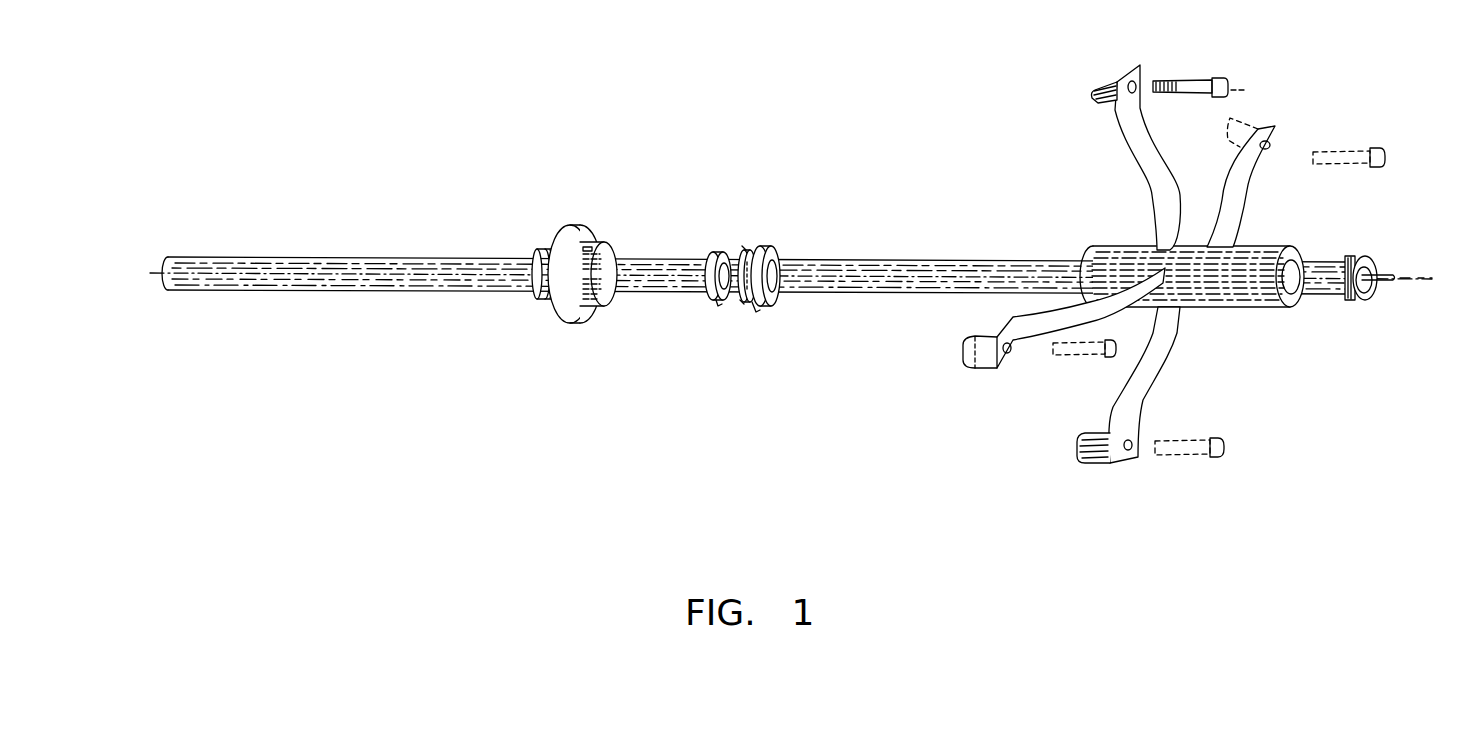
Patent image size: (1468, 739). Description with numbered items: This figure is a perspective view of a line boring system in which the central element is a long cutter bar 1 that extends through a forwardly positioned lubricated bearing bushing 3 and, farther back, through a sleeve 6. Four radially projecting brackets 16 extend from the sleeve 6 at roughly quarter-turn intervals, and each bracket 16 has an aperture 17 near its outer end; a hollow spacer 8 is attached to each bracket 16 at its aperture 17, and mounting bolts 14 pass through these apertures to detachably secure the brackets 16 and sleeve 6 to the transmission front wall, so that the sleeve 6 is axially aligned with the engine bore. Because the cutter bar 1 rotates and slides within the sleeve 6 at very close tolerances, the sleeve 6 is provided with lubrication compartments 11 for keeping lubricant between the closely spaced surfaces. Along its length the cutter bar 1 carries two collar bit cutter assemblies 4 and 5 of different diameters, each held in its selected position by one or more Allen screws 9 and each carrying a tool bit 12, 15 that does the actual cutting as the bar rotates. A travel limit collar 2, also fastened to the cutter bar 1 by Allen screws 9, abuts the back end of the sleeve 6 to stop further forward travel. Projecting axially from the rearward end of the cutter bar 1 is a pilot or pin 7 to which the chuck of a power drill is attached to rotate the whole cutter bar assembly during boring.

The cutter bar 1 is at (363, 255).
The travel limit collar 2 is at (1352, 305).
The lubricated bearing bushing 3 is at (904, 276).
The collar bit cutter assembly 4 is at (712, 252).
The collar bit cutter assembly 5 is at (768, 243).
The sleeve 6 is at (1211, 309).
The pilot or pin 7 is at (1392, 267).
The hollow spacer 8 is at (1100, 102).
The Allen screws 9 is at (706, 285).
The lubrication compartments 11 is at (588, 245).
The tool bit 12 is at (716, 305).
The mounting bolts 14 is at (1192, 79).
The tool bit 15 is at (748, 246).
The brackets 16 is at (1140, 181).
The aperture 17 is at (1006, 356).